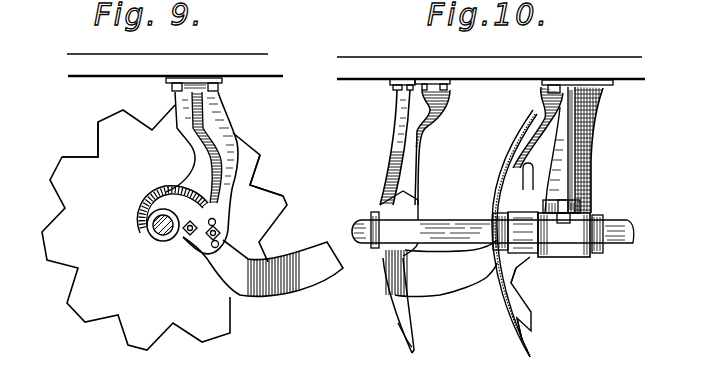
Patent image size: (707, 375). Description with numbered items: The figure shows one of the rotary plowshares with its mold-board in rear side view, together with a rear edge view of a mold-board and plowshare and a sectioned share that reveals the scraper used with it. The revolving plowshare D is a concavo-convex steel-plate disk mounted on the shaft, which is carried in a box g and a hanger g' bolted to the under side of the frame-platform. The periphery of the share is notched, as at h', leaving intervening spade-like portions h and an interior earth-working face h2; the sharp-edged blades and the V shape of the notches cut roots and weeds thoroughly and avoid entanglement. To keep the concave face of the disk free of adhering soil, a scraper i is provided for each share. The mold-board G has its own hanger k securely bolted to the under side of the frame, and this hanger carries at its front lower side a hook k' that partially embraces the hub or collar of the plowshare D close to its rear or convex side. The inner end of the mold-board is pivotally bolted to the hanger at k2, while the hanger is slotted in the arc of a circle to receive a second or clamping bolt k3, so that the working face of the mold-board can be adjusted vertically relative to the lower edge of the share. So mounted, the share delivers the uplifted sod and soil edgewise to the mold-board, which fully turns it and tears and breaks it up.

In FIG. 9, the spade-like portion h is at (164, 227).
In FIG. 10, the spade-like portion h is at (531, 340).
In FIG. 9, the notch h' is at (172, 158).
In FIG. 10, the notch h' is at (548, 298).
In FIG. 10, the interior earth-working face h2 is at (573, 270).
In FIG. 9, the hanger k is at (207, 173).
In FIG. 10, the hanger k is at (390, 147).
In FIG. 9, the hook k' is at (163, 217).
In FIG. 9, the pivot bolt k2 is at (183, 243).
In FIG. 9, the clamping bolt k3 is at (218, 234).
In FIG. 9, the revolving plowshare D is at (150, 273).
In FIG. 10, the revolving plowshare D is at (450, 233).
In FIG. 9, the mold-board G is at (263, 268).
In FIG. 10, the mold-board G is at (441, 270).
In FIG. 10, the scraper i is at (433, 128).
In FIG. 10, the hanger g' is at (594, 150).
In FIG. 10, the box g is at (493, 228).